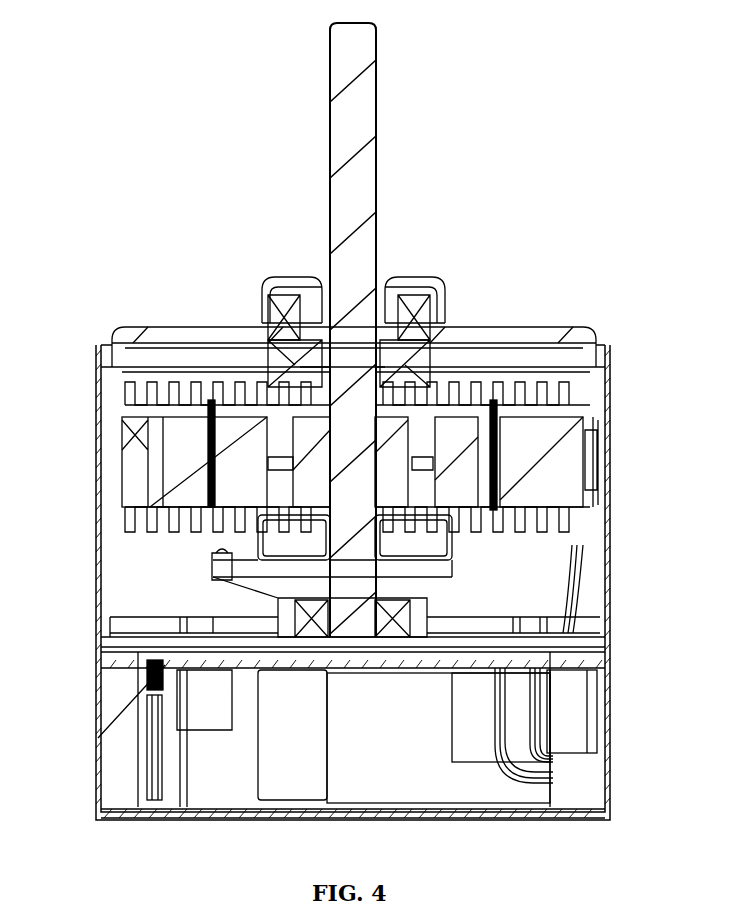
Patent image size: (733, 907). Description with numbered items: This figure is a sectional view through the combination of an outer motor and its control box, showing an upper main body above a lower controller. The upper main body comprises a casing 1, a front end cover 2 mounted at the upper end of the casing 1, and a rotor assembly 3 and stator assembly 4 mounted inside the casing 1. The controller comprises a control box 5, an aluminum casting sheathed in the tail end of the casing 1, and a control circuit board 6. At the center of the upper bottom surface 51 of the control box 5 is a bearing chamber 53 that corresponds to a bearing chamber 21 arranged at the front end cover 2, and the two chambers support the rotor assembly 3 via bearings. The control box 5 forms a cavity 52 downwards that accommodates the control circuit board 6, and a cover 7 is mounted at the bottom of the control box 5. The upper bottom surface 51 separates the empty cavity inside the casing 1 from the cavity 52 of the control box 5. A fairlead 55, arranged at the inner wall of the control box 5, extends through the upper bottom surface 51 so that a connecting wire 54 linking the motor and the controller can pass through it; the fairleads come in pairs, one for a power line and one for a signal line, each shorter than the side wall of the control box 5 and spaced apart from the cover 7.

The casing 1 is at (610, 472).
The front end cover 2 is at (563, 330).
The rotor assembly 3 is at (300, 425).
The stator assembly 4 is at (145, 470).
The control box 5 is at (553, 645).
The control circuit board 6 is at (600, 668).
The cover 7 is at (547, 807).
The bearing chamber 21 is at (450, 320).
The upper bottom surface 51 is at (160, 637).
The cavity 52 is at (353, 755).
The bearing chamber 53 is at (278, 603).
The connecting wire 54 is at (580, 575).
The fairlead 55 is at (558, 743).